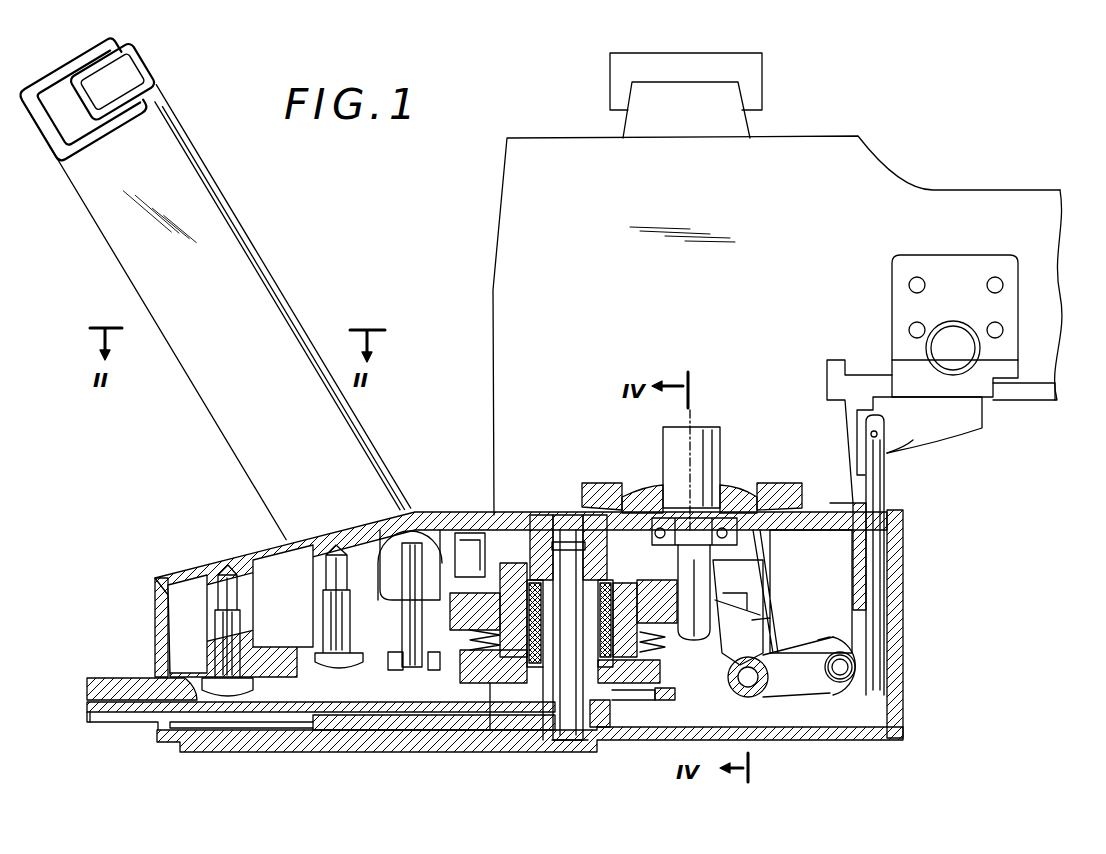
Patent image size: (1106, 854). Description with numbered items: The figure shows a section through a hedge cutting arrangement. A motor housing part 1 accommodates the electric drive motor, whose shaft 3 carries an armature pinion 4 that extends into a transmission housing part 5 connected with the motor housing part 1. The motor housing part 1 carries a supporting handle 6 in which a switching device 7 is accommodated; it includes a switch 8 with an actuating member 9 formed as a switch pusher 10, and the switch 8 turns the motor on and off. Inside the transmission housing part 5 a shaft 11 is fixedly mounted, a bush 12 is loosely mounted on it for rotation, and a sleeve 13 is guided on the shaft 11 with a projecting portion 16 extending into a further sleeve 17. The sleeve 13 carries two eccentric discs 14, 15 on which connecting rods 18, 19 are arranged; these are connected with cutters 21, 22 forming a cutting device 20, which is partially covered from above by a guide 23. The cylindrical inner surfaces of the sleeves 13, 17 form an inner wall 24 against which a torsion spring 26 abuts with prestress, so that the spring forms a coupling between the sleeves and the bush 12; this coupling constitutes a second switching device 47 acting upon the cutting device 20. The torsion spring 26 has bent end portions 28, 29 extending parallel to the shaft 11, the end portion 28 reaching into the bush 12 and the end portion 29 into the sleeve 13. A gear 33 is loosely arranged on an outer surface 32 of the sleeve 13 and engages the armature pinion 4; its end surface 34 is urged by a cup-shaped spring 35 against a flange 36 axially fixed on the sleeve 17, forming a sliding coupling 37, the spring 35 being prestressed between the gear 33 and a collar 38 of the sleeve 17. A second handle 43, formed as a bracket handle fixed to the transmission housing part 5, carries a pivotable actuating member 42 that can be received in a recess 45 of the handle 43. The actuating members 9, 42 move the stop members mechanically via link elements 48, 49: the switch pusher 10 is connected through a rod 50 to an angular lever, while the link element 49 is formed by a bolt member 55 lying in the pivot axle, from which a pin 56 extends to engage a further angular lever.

The motor housing part 1 is at (505, 252).
The shaft 3 is at (721, 452).
The armature pinion 4 is at (722, 620).
The transmission housing part 5 is at (897, 606).
The handle 6 is at (1032, 200).
The switching device 7 is at (943, 242).
The switch 8 is at (1010, 310).
The actuating member 9 is at (960, 410).
The switch pusher 10 is at (913, 430).
The shaft 11 is at (579, 741).
The bush 12 is at (565, 640).
The sleeve 13 is at (531, 735).
The eccentric disc 14 is at (663, 692).
The eccentric disc 15 is at (491, 738).
The projecting portion 16 is at (470, 665).
The further sleeve 17 is at (680, 640).
The connecting rod 18 is at (338, 712).
The connecting rod 19 is at (397, 732).
The cutting device 20 is at (94, 722).
The cutter 21 is at (102, 678).
The cutter 22 is at (140, 713).
The guide 23 is at (152, 690).
The inner wall 24 is at (630, 597).
The torsion spring 26 is at (600, 585).
The end portion 28 is at (533, 580).
The end portion 29 is at (620, 727).
The outer surface 32 is at (720, 640).
The gear 33 is at (765, 620).
The end surface 34 is at (470, 605).
The spring 35 is at (485, 635).
The flange 36 is at (705, 580).
The sliding coupling 37 is at (482, 555).
The collar 38 is at (680, 692).
The actuating member 42 is at (216, 304).
The second handle 43 is at (218, 395).
The recess 45 is at (67, 118).
The second switching device 47 is at (627, 493).
The link element 48 is at (817, 642).
The link element 49 is at (390, 590).
The rod 50 is at (877, 552).
The bolt member 55 is at (815, 681).
The pin 56 is at (418, 628).